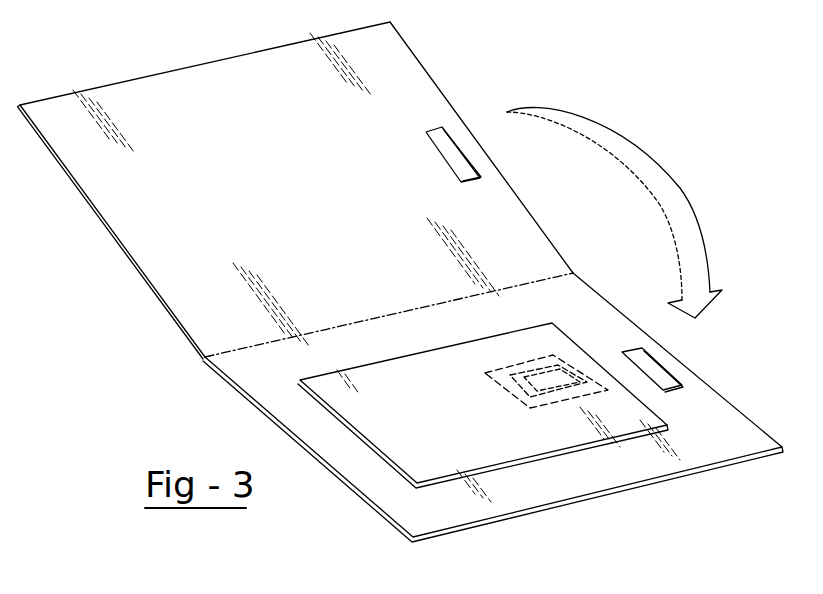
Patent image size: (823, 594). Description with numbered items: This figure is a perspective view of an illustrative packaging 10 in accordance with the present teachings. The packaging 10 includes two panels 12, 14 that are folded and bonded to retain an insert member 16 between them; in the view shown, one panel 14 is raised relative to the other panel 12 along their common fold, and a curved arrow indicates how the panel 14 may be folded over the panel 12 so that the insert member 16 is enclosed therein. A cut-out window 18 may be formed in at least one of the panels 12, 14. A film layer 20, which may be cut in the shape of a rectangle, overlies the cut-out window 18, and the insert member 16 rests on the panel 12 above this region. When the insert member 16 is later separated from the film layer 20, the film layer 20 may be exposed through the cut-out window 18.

The packaging 10 is at (136, 331).
The panel 12 is at (737, 427).
The panel 14 is at (417, 78).
The insert member 16 is at (393, 367).
The cut-out window 18 is at (560, 356).
The film layer 20 is at (593, 391).